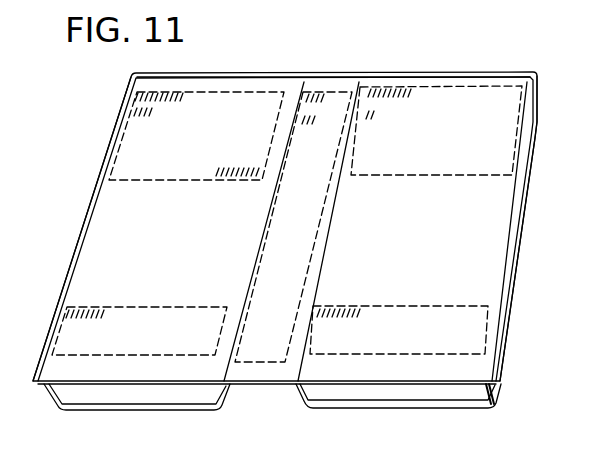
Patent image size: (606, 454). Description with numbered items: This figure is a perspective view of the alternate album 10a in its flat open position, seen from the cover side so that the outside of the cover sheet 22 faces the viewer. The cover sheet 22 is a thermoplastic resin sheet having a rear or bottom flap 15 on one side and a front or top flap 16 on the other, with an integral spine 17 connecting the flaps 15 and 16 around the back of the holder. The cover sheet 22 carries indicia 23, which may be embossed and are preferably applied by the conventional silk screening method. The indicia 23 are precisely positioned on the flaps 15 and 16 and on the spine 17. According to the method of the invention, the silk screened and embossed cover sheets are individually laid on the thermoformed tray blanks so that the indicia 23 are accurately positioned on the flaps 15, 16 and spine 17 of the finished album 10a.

The alternate album 10a is at (410, 68).
The rear or bottom flap 15 is at (113, 199).
The front or top flap 16 is at (491, 249).
The spine 17 is at (331, 84).
The cover sheet 22 is at (483, 221).
The indicia 23 is at (174, 158).